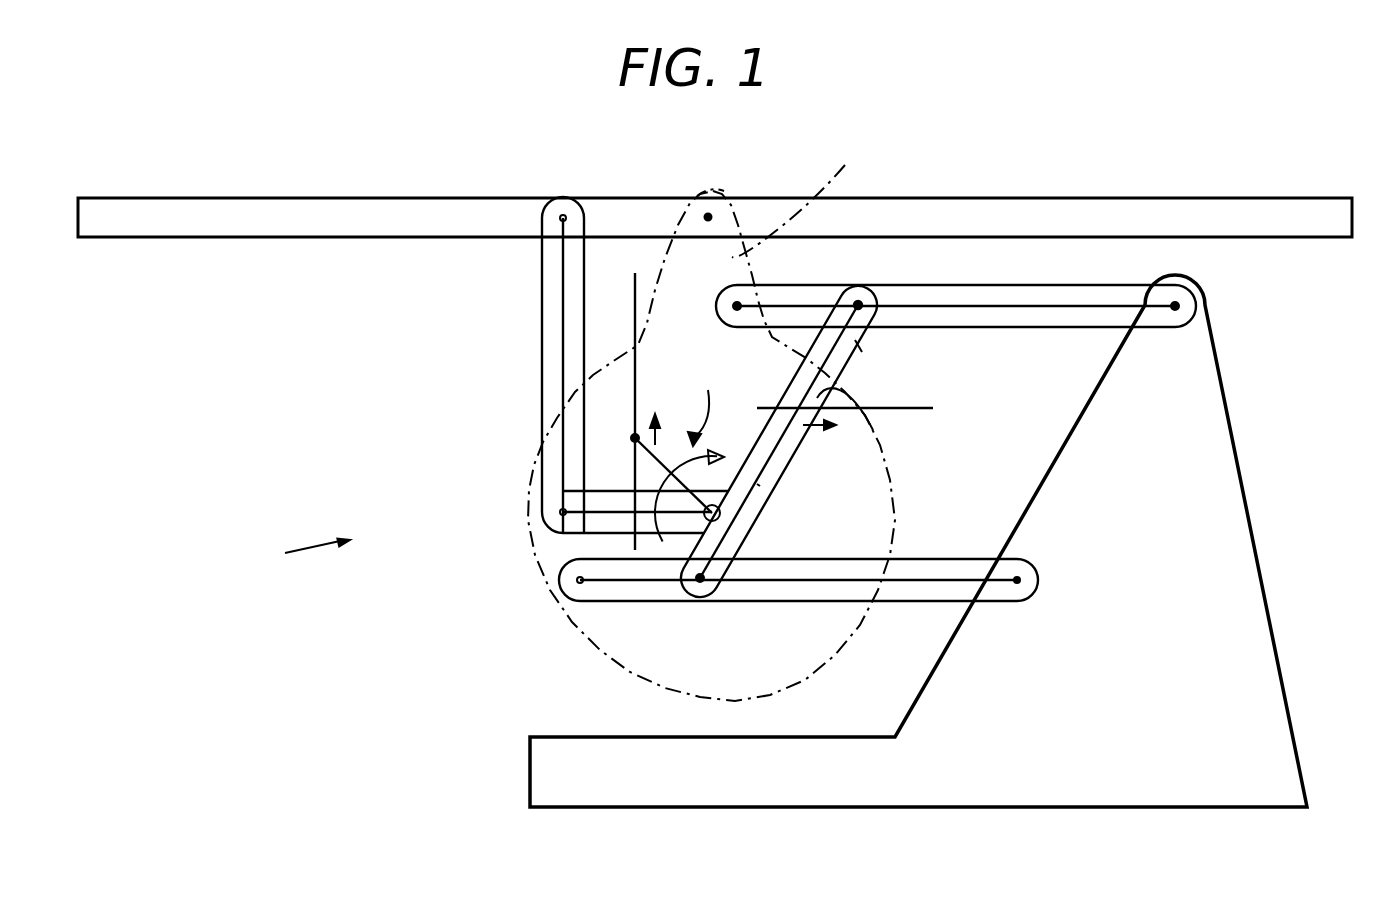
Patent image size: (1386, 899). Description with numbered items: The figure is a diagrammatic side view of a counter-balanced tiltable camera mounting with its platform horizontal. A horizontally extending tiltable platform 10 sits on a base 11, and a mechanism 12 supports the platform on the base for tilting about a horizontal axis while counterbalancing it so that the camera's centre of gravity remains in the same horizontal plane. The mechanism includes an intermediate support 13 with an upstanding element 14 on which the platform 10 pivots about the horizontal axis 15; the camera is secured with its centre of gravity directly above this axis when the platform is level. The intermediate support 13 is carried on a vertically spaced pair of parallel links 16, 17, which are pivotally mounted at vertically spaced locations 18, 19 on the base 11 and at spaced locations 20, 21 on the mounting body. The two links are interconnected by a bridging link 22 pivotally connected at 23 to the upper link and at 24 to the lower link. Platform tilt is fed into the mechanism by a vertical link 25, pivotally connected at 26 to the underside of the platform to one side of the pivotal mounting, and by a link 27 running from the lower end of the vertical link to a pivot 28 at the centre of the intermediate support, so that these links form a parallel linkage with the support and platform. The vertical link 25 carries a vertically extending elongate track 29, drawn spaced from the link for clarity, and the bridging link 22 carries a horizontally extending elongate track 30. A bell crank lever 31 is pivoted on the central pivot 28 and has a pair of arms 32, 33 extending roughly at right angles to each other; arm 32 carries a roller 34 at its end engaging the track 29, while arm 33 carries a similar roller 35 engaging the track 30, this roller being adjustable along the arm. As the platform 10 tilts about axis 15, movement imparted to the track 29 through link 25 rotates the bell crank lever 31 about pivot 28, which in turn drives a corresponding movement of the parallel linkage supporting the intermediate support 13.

The tiltable platform 10 is at (150, 215).
The base 11 is at (577, 788).
The mechanism 12 is at (291, 559).
The intermediate support 13 is at (530, 560).
The upstanding element 14 is at (806, 193).
The horizontal axis 15 is at (708, 217).
The upper parallel link 16 is at (1072, 287).
The lower parallel link 17 is at (930, 560).
The pivot location on base 18 is at (1188, 320).
The pivot location on base 19 is at (1011, 602).
The pivot location on mounting body 20 is at (737, 306).
The pivot location on mounting body 21 is at (563, 590).
The bridging link 22 is at (860, 348).
The pivotal connection 23 is at (870, 290).
The pivotal connection 24 is at (683, 606).
The vertical link 25 is at (542, 275).
The pivotal connection 26 is at (558, 218).
The link 27 is at (612, 491).
The central pivot 28 is at (728, 512).
The vertically extending elongate track 29 is at (637, 380).
The horizontally extending elongate track 30 is at (913, 408).
The bell crank lever 31 is at (712, 401).
The lever arm 32 is at (660, 465).
The lever arm 33 is at (757, 484).
The roller 34 is at (635, 438).
The roller 35 is at (873, 430).